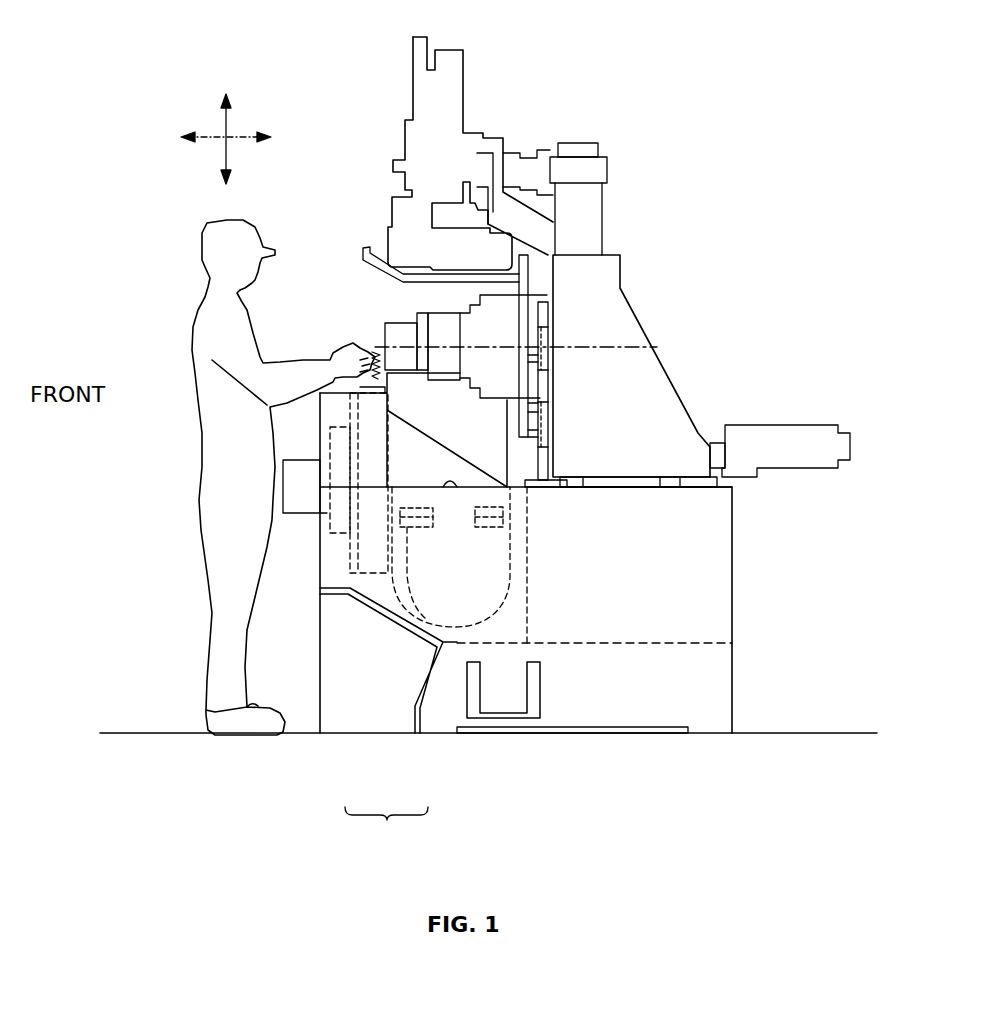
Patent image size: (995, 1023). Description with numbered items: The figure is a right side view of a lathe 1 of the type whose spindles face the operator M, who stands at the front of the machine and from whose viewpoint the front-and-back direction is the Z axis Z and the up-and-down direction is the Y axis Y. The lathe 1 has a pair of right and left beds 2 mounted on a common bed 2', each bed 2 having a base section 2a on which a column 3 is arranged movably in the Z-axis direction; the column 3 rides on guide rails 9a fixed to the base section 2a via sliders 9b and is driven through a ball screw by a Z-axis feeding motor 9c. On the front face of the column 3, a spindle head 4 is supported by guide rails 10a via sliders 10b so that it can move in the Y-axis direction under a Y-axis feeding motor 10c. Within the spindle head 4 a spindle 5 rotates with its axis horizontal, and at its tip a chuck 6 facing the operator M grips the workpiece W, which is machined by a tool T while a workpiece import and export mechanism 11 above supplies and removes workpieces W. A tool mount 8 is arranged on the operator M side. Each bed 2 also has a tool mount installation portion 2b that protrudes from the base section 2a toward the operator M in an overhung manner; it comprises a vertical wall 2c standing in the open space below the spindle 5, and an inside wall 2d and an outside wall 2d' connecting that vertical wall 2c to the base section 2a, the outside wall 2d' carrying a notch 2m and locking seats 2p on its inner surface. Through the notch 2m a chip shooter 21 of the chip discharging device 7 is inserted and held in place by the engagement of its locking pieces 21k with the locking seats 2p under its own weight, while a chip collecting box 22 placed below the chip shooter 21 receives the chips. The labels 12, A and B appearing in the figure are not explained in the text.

The lathe 1 is at (694, 129).
The bed 2 is at (565, 563).
The common bed 2' is at (636, 669).
The base section 2a is at (710, 557).
The tool mount installation portion 2b is at (386, 829).
The vertical wall 2c is at (338, 580).
The inside wall 2d is at (413, 430).
The outside wall 2d' is at (414, 709).
The notch 2m is at (452, 490).
The locking seat 2p is at (403, 628).
The column 3 is at (650, 377).
The spindle head 4 is at (502, 387).
The spindle 5 is at (465, 383).
The chuck 6 is at (440, 370).
The chip discharging device 7 is at (490, 628).
The tool mount 8 is at (304, 531).
The guide rail 9a is at (623, 470).
The slider 9b is at (573, 487).
The Z-axis feeding motor 9c is at (780, 425).
The guide rail 10a is at (548, 310).
The slider 10b is at (548, 355).
The Y-axis feeding motor 10c is at (578, 140).
The workpiece import and export mechanism 11 is at (397, 88).
The floor 12 is at (333, 727).
The chip shooter 21 is at (564, 697).
The locking piece 21k is at (407, 527).
The chip collecting box 22 is at (540, 687).
The operator M is at (197, 313).
The workpiece W is at (387, 316).
The tool T is at (347, 347).
The axis A is at (593, 343).
The operator position B is at (293, 487).
The Y-axis direction Y is at (223, 125).
The Z-axis direction Z is at (213, 140).